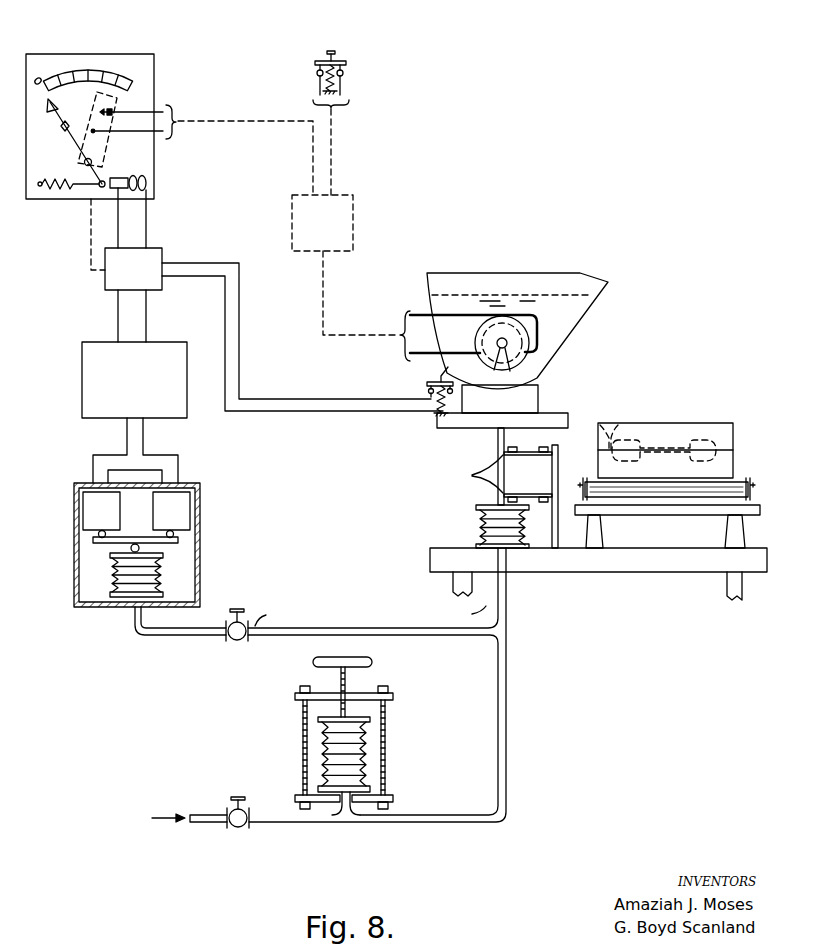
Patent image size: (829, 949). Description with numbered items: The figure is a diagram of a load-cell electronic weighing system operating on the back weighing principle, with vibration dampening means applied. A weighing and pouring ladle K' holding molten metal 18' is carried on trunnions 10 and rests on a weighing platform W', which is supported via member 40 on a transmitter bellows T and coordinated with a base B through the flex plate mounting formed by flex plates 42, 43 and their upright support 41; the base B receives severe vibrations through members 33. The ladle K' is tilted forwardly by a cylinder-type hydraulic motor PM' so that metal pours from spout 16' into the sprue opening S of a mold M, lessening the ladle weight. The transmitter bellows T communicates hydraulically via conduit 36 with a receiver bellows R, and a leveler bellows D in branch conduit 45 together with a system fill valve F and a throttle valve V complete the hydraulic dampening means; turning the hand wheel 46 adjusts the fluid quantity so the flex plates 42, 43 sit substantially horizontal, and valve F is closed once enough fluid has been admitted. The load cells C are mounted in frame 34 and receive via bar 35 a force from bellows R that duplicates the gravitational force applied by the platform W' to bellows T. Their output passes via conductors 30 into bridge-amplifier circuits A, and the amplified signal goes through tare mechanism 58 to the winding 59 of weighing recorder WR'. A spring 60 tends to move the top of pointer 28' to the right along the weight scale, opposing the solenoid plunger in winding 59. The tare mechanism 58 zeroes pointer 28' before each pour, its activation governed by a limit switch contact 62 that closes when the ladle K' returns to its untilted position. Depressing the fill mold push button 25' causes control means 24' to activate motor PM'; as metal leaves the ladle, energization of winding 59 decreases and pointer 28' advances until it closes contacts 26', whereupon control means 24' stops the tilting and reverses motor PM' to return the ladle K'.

The weighing recorder WR' is at (117, 116).
The pointer 28' is at (67, 143).
The contacts 26' is at (195, 143).
The spring 60 is at (60, 181).
The winding 59 is at (125, 177).
The tare mechanism 58 is at (163, 256).
The bridge-amplifier circuits A is at (82, 383).
The conductors 30 is at (128, 440).
The frame 34 is at (74, 552).
The load cells C is at (152, 521).
The bar 35 is at (170, 544).
The receiver bellows R is at (110, 573).
The conduit 36 is at (414, 636).
The throttle valve V is at (236, 642).
The branch conduit 45 is at (472, 813).
The fill valve F is at (238, 830).
The leveler bellows D is at (321, 752).
The hand wheel 46 is at (313, 661).
The weighing and pouring ladle K' is at (517, 318).
The spout 16' is at (633, 294).
The molten metal 18' is at (511, 291).
The pivot hub 10 is at (500, 364).
The hydraulic motor PM' is at (430, 306).
The limit switch contact 62 is at (428, 382).
The weighing platform W' is at (477, 420).
The member 40 is at (497, 445).
The post 41 is at (558, 478).
The flex plate 42 is at (528, 448).
The flex plate 43 is at (535, 498).
The transmitter bellows T is at (477, 528).
The base B is at (430, 563).
The members 33 is at (453, 586).
The mold M is at (733, 442).
The sprue opening S is at (611, 425).
The fill mold push button 25' is at (315, 103).
The control means 24' is at (300, 223).